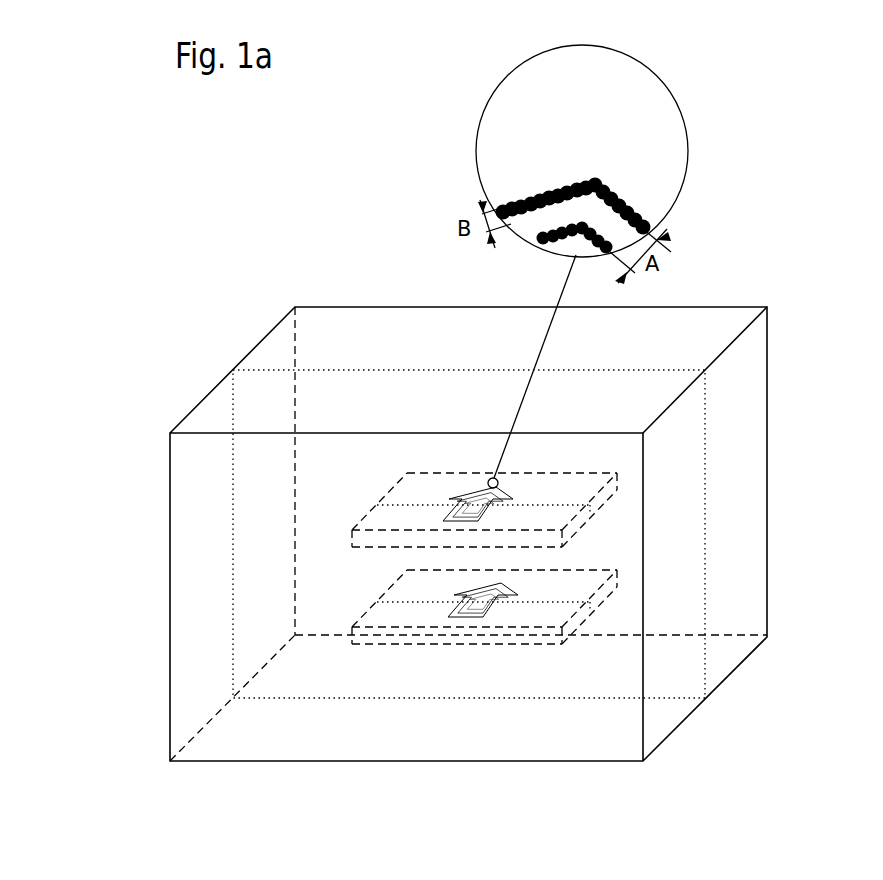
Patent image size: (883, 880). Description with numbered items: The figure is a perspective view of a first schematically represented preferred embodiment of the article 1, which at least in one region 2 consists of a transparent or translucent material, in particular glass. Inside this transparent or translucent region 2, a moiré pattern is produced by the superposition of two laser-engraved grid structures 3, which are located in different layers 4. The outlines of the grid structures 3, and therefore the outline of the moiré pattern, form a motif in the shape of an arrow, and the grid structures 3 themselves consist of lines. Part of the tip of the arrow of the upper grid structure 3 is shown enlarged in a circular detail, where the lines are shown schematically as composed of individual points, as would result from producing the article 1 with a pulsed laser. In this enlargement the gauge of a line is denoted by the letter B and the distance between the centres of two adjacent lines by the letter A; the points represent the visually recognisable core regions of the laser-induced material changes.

The article 1 is at (746, 270).
The transparent or translucent region 2 is at (745, 558).
The grid structures 3 is at (532, 578).
The layers 4 is at (368, 620).